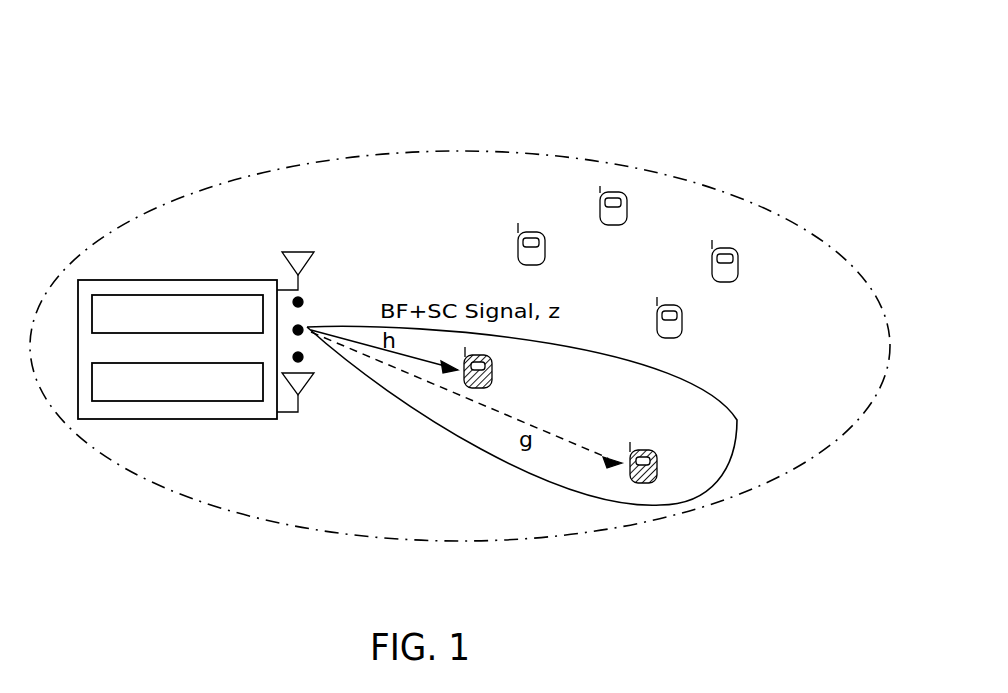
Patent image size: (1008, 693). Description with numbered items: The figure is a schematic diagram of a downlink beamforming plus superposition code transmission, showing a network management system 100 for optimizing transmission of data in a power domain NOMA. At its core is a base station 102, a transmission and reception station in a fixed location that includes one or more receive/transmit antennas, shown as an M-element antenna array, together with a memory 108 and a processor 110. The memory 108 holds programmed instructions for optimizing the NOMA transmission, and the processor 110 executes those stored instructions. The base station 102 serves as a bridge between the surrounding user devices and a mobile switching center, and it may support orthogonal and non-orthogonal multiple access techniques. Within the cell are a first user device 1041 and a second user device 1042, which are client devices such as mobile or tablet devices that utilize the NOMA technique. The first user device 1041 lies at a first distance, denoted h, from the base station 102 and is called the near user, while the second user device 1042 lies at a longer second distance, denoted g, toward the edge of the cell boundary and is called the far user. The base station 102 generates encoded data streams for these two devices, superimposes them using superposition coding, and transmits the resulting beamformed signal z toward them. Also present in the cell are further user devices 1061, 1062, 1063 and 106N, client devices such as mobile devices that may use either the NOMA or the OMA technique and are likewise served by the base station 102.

The network management system 100 is at (215, 72).
The base station 102 is at (230, 280).
The first user device 1041 is at (492, 372).
The second user device 1042 is at (643, 448).
The user device 1061 is at (518, 245).
The user device 1062 is at (613, 186).
The user device 1063 is at (712, 258).
The user device 106N is at (682, 320).
The memory 108 is at (178, 295).
The processor 110 is at (237, 401).